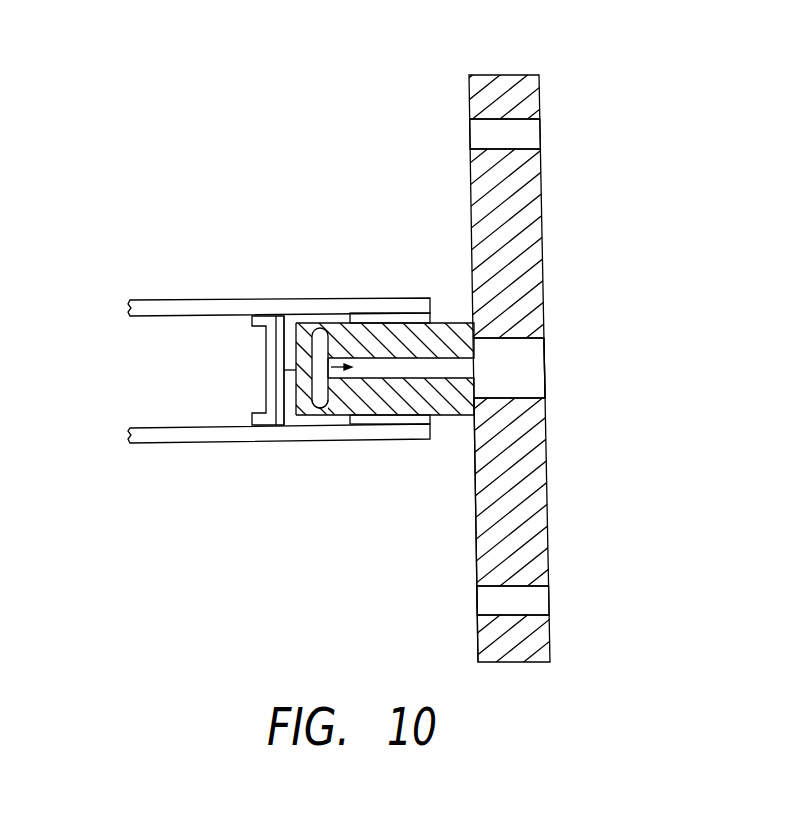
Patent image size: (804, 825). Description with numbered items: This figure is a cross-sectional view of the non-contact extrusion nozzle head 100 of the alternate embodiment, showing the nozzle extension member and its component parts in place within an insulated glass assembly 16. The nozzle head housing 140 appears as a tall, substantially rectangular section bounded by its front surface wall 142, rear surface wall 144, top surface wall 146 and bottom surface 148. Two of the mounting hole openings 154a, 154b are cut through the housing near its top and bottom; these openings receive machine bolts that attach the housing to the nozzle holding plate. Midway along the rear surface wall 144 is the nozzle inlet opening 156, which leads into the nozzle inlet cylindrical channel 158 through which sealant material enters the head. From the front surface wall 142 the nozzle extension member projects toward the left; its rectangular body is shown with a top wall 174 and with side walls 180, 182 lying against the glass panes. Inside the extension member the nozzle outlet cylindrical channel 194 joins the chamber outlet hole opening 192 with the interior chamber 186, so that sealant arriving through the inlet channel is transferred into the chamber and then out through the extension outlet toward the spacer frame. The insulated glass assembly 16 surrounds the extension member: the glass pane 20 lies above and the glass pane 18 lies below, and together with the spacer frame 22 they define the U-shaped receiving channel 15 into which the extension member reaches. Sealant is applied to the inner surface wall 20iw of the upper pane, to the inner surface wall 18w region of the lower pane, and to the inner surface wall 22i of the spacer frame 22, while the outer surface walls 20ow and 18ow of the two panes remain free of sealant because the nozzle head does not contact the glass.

The non-contact extrusion nozzle head 100 is at (370, 162).
The nozzle head housing 140 is at (464, 84).
The front surface wall 142 is at (477, 540).
The rear surface wall 144 is at (542, 183).
The top surface wall 146 is at (505, 73).
The bottom surface 148 is at (525, 662).
The mounting hole opening 154a is at (533, 132).
The mounting hole opening 154b is at (497, 605).
The nozzle inlet opening 156 is at (553, 338).
The nozzle inlet cylindrical channel 158 is at (527, 367).
The insulated glass assembly 16 is at (183, 294).
The U-shaped receiving channel 15 is at (288, 335).
The glass pane 20 is at (347, 299).
The outer surface wall 20ow is at (295, 299).
The inner surface wall 20iw is at (398, 340).
The side wall 182 is at (350, 318).
The chamber outlet hole opening 192 is at (320, 330).
The nozzle outlet cylindrical channel 194 is at (450, 340).
The interior chamber 186 is at (318, 410).
The spacer frame 22 is at (270, 338).
The inner surface wall 22i is at (290, 352).
The top wall 174 is at (285, 372).
The glass pane 18 is at (347, 439).
The outer surface wall 18ow is at (247, 442).
The lower panel inner wall 18w is at (428, 415).
The side wall 180 is at (372, 424).